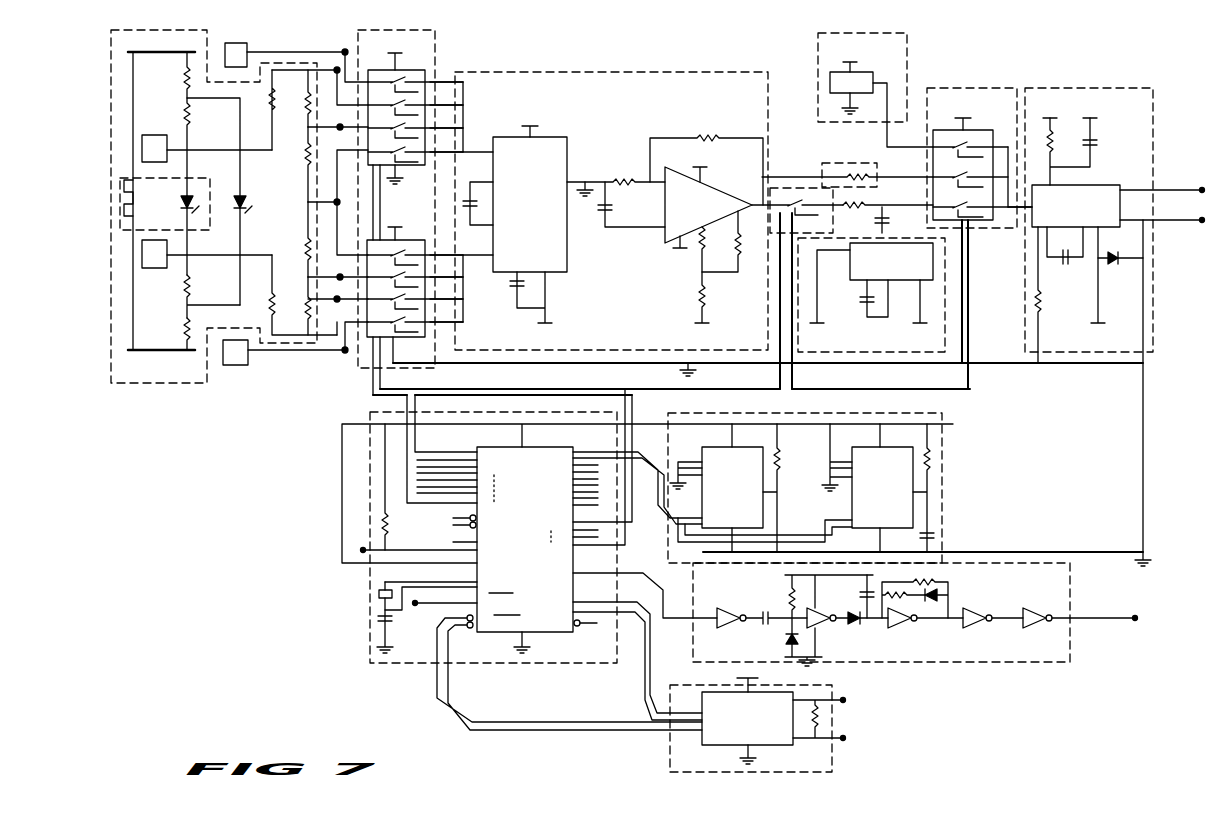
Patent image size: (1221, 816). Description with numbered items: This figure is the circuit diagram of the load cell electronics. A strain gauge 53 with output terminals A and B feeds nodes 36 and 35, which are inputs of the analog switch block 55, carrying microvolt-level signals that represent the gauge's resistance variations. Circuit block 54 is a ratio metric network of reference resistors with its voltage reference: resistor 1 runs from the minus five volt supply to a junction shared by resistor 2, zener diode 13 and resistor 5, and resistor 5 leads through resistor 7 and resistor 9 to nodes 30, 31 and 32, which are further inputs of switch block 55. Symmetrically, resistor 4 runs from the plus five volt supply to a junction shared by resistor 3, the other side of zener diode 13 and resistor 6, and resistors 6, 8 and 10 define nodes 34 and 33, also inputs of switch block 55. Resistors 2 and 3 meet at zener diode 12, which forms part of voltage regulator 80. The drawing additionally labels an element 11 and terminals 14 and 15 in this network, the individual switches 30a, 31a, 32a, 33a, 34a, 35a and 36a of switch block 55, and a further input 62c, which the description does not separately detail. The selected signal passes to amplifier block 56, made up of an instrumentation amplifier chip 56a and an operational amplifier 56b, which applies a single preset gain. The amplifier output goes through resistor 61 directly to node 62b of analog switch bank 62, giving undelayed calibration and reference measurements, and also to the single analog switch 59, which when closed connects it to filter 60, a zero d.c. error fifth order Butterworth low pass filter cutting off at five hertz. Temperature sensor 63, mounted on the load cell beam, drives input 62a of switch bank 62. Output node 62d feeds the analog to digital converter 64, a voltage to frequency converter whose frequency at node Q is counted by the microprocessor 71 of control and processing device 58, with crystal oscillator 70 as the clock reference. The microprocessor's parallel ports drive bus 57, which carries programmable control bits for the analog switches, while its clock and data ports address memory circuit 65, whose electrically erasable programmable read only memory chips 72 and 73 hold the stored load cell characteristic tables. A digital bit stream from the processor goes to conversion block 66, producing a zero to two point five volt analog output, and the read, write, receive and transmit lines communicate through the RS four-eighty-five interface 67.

The resistor 1 is at (183, 73).
The resistor 2 is at (183, 105).
The resistor 3 is at (183, 280).
The resistor 4 is at (183, 326).
The resistor 5 is at (276, 108).
The resistor 6 is at (274, 304).
The resistor 7 is at (306, 104).
The resistor 8 is at (305, 301).
The resistor 9 is at (305, 152).
The resistor 10 is at (306, 257).
The heating element 11 is at (136, 206).
The zener diode 12 is at (194, 201).
The zener diode 13 is at (246, 201).
The X electrode terminal 14 is at (142, 150).
The Y electrode terminal 15 is at (142, 256).
The node 30 is at (335, 68).
The node 31 is at (340, 124).
The node 32 is at (339, 200).
The node 33 is at (340, 275).
The node 34 is at (337, 296).
The node 35 is at (345, 354).
The node 36 is at (347, 43).
The switch 30a is at (438, 104).
The switch 31a is at (438, 127).
The switch 32a is at (438, 151).
The switch 33a is at (440, 278).
The switch 34a is at (440, 298).
The switch 35a is at (440, 322).
The switch 36a is at (438, 80).
The strain gauge 53 is at (248, 49).
The ratio metric resistor network 54 is at (123, 42).
The switch block 55 is at (437, 48).
The amplifier block 56 is at (635, 87).
The instrumentation amplifier chip 56a is at (553, 142).
The operational amplifier 56b is at (663, 240).
The bus 57 is at (497, 389).
The control and processing device 58 is at (347, 578).
The analog switch block 59 is at (790, 192).
The filter 60 is at (852, 340).
The resistor 61 is at (853, 168).
The analog switch bank 62 is at (985, 98).
The switch input 62a is at (947, 150).
The switch node 62b is at (947, 180).
The switch 62c is at (947, 210).
The output node 62d is at (1013, 223).
The temperature sensor 63 is at (907, 53).
The analog voltage to digital value converter 64 is at (1070, 88).
The memory circuit 65 is at (937, 414).
The conversion block 66 is at (1035, 653).
The RS 485 serial output 67 is at (820, 756).
The crystal oscillator 70 is at (380, 594).
The microprocessor device 71 is at (515, 637).
The memory chip 72 is at (752, 473).
The memory chip 73 is at (903, 478).
The voltage regulator 80 is at (120, 196).